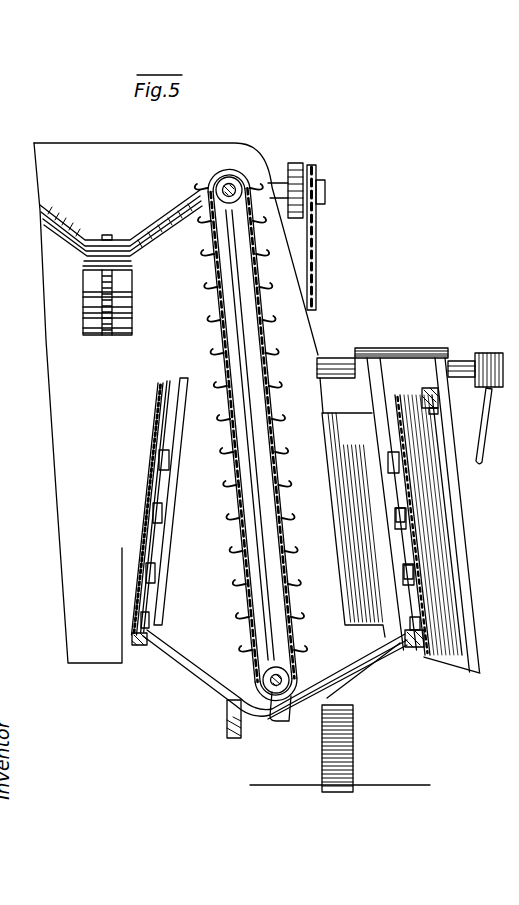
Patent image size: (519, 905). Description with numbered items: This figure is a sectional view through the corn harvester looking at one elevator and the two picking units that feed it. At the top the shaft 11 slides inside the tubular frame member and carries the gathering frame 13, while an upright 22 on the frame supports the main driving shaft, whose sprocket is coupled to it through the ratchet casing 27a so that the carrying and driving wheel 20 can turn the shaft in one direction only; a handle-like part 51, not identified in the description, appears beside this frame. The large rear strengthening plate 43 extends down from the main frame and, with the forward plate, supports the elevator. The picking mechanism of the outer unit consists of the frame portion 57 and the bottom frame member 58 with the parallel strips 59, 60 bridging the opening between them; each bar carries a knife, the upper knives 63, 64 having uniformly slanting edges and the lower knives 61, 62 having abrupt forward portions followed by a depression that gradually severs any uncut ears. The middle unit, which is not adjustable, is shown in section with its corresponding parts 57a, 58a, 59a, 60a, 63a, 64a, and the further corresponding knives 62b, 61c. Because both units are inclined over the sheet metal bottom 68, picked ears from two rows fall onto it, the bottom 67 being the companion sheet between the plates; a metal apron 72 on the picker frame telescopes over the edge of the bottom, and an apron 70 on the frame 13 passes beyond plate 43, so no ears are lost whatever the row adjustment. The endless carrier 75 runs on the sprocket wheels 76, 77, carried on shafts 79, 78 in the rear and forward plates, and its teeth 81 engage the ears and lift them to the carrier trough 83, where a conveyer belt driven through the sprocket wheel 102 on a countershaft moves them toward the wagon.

The rear stationary strengthening plate 43 is at (100, 149).
The carrier trough 83 is at (57, 222).
The sprocket wheel 102 is at (113, 288).
The flexible endless carrier 75 is at (267, 341).
The sprocket wheel 76 is at (216, 181).
The shaft 79 is at (232, 186).
The sprocket wheel 77 is at (266, 676).
The shaft 78 is at (288, 722).
The teeth or caps 81 is at (252, 256).
The upright 22 is at (281, 176).
The ratchet casing 27a is at (310, 166).
The shaft 11 is at (325, 367).
The gathering frame 13 is at (398, 355).
The handle 51 is at (496, 407).
The apron 70 is at (353, 525).
The frame portion 57 is at (402, 470).
The strip 59 is at (410, 527).
The strip 60 is at (418, 580).
The bottom frame member 58 is at (424, 640).
The knife 64 is at (388, 460).
The knife 63 is at (396, 514).
The knife 62 is at (404, 572).
The knife 61 is at (413, 622).
The sheet metal bottom plate 67 is at (197, 672).
The sheet metal bottom plate 68 is at (366, 680).
The metal apron 72 is at (382, 660).
The carrying and driving wheel 20 is at (347, 740).
The frame portion of middle unit 57a is at (158, 458).
The strip of middle unit 59a is at (153, 514).
The strip of middle unit 60a is at (147, 573).
The bottom frame member of middle unit 58a is at (139, 630).
The knife of middle unit 64a is at (168, 459).
The knife of middle unit 63a is at (162, 512).
The block 62b is at (155, 569).
The block 61c is at (149, 620).